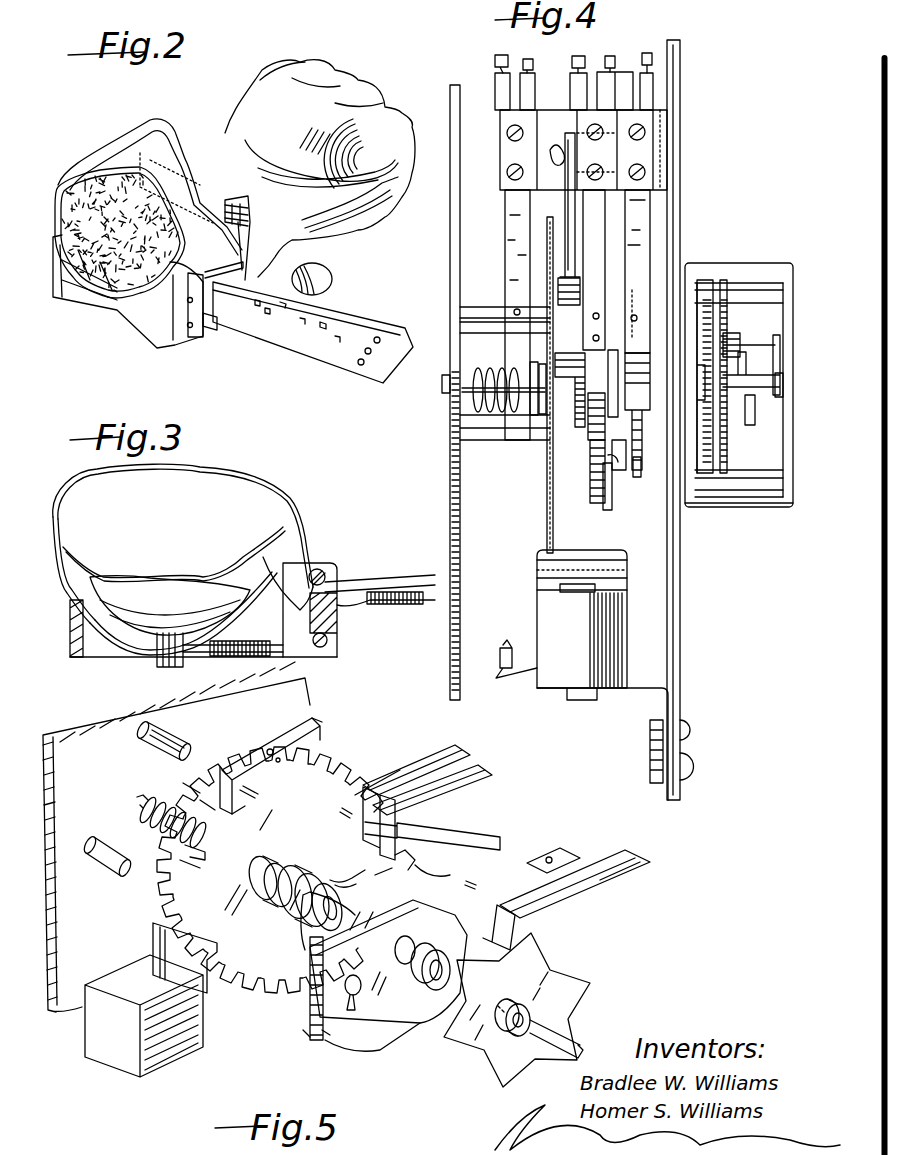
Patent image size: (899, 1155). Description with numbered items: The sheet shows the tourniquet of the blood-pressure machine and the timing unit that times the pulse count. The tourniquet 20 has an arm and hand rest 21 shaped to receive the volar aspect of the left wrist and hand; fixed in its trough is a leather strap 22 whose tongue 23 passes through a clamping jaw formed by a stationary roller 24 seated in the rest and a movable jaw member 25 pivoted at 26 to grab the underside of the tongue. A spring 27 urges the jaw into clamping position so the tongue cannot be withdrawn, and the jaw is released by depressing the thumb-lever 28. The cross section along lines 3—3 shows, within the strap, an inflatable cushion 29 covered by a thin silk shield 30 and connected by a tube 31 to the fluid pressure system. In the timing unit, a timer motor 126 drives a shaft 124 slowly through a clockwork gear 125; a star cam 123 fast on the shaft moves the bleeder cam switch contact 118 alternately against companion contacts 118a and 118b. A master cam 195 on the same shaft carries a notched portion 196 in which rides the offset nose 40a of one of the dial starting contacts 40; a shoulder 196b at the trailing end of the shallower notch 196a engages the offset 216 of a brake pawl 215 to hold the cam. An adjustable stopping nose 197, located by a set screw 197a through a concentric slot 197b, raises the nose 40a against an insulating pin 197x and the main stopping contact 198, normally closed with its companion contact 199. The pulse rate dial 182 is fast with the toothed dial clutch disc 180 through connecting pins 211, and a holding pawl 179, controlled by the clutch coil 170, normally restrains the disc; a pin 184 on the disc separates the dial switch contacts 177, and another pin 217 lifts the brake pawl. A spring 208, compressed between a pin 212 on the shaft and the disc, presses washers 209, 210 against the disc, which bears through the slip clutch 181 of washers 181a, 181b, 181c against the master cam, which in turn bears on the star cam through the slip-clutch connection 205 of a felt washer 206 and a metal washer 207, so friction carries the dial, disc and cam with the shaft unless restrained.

In FIG. 2, the section line 3— 3 is at (90, 138).
In FIG. 2, the tourniquet 20 is at (286, 54).
In FIG. 2, the arm and hand rest 21 is at (247, 100).
In FIG. 2, the leather strap 22 is at (170, 130).
In FIG. 3, the leather strap 22 is at (90, 590).
In FIG. 2, the tongue 23 is at (340, 322).
In FIG. 3, the tongue 23 is at (360, 583).
In FIG. 2, the stationary roller 24 is at (214, 278).
In FIG. 3, the stationary roller 24 is at (320, 569).
In FIG. 2, the movable jaw member 25 is at (215, 323).
In FIG. 3, the movable jaw member 25 is at (345, 613).
In FIG. 2, the pivot 26 is at (189, 338).
In FIG. 3, the pivot 26 is at (323, 646).
In FIG. 3, the spring 27 is at (250, 656).
In FIG. 2, the thumb-lever 28 is at (328, 276).
In FIG. 3, the thumb-lever 28 is at (400, 605).
In FIG. 3, the inflatable cushion 29 is at (180, 604).
In FIG. 2, the protective shield 30 is at (105, 292).
In FIG. 3, the protective shield 30 is at (208, 573).
In FIG. 3, the tube 31 is at (167, 660).
In FIG. 5, the dial starting contacts 40 is at (462, 790).
In FIG. 5, the offset nose 40a is at (367, 915).
In FIG. 4, the bleeder cam switch contact 118 is at (642, 420).
In FIG. 5, the bleeder cam switch contact 118 is at (582, 860).
In FIG. 4, the companion contact 118a is at (645, 209).
In FIG. 5, the companion contact 118a is at (570, 855).
In FIG. 5, the companion contact 118b is at (592, 885).
In FIG. 4, the star cam 123 is at (641, 472).
In FIG. 5, the star cam 123 is at (580, 1000).
In FIG. 4, the shaft 124 is at (446, 392).
In FIG. 5, the shaft 124 is at (550, 1045).
In FIG. 4, the clockwork gear 125 is at (748, 334).
In FIG. 4, the timer motor 126 is at (780, 257).
In FIG. 4, the clutch coil 170 is at (530, 628).
In FIG. 5, the clutch coil 170 is at (175, 1062).
In FIG. 4, the dial switch contacts 177 is at (502, 218).
In FIG. 5, the dial switch contacts 177 is at (275, 722).
In FIG. 4, the holding pawl 179 is at (545, 560).
In FIG. 5, the holding pawl 179 is at (150, 940).
In FIG. 4, the dial clutch disc 180 is at (547, 541).
In FIG. 5, the dial clutch disc 180 is at (230, 855).
In FIG. 4, the slip clutch 181 is at (578, 354).
In FIG. 5, the slip clutch 181 is at (306, 853).
In FIG. 4, the slip clutch washer 181a is at (590, 425).
In FIG. 5, the slip clutch washer 181a is at (300, 905).
In FIG. 5, the slip clutch washer 181b is at (328, 876).
In FIG. 5, the slip clutch washer 181c is at (305, 920).
In FIG. 4, the pulse rate dial 182 is at (442, 523).
In FIG. 5, the pulse rate dial 182 is at (108, 913).
In FIG. 5, the pin 184 is at (253, 799).
In FIG. 4, the master cam 195 is at (593, 503).
In FIG. 5, the master cam 195 is at (392, 1038).
In FIG. 5, the notched portion 196 is at (303, 948).
In FIG. 5, the shallower notch 196a is at (378, 878).
In FIG. 5, the shoulder 196b is at (436, 890).
In FIG. 4, the stopping nose 197 is at (608, 510).
In FIG. 5, the stopping nose 197 is at (312, 1030).
In FIG. 4, the set screw 197a is at (622, 462).
In FIG. 5, the set screw 197a is at (308, 1016).
In FIG. 5, the concentric slot 197b is at (326, 1044).
In FIG. 5, the insulating pin 197x is at (357, 792).
In FIG. 4, the main stopping contact 198 is at (589, 203).
In FIG. 5, the main stopping contact 198 is at (395, 790).
In FIG. 5, the companion contact 199 is at (455, 770).
In FIG. 4, the slip-clutch connection 205 is at (617, 339).
In FIG. 5, the slip-clutch connection 205 is at (401, 985).
In FIG. 5, the felt washer 206 is at (420, 950).
In FIG. 5, the metal washer 207 is at (425, 1000).
In FIG. 5, the spring 208 is at (178, 790).
In FIG. 4, the metal washer 209 is at (531, 410).
In FIG. 5, the metal washer 209 is at (184, 851).
In FIG. 4, the felt washer 210 is at (542, 412).
In FIG. 5, the felt washer 210 is at (182, 861).
In FIG. 4, the connecting pins 211 is at (477, 314).
In FIG. 5, the connecting pins 211 is at (163, 742).
In FIG. 4, the pin 212 is at (475, 366).
In FIG. 5, the pin 212 is at (135, 830).
In FIG. 4, the brake pawl 215 is at (575, 213).
In FIG. 5, the brake pawl 215 is at (480, 824).
In FIG. 4, the offset 216 is at (577, 306).
In FIG. 5, the offset 216 is at (400, 862).
In FIG. 5, the pin 217 is at (340, 808).